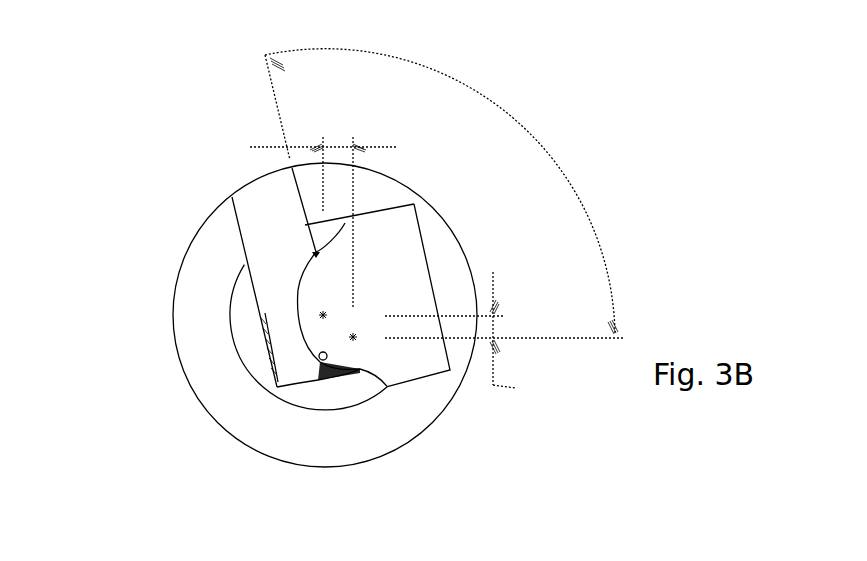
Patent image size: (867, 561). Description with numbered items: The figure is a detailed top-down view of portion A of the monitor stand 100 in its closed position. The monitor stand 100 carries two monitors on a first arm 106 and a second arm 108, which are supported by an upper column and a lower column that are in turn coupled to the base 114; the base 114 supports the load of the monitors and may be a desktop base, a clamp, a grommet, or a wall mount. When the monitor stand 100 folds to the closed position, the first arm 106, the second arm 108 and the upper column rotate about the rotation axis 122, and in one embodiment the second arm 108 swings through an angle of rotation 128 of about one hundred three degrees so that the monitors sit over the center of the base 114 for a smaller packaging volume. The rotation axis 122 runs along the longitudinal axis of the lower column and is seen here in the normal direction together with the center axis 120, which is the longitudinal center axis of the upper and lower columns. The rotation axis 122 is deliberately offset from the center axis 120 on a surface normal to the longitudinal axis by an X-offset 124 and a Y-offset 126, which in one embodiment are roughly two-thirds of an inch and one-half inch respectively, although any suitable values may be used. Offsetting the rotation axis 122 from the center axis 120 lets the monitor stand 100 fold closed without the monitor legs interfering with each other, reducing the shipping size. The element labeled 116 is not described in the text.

The monitor stand 100 is at (371, 288).
The first arm 106 is at (375, 195).
The second arm 108 is at (267, 203).
The base 114 is at (196, 344).
The insert body 116 is at (411, 363).
The center axis 120 is at (323, 315).
The rotation axis 122 is at (353, 337).
The X-offset 124 is at (292, 222).
The Y-offset 126 is at (505, 334).
The angle of rotation 128 is at (441, 192).
The portion A is at (185, 383).